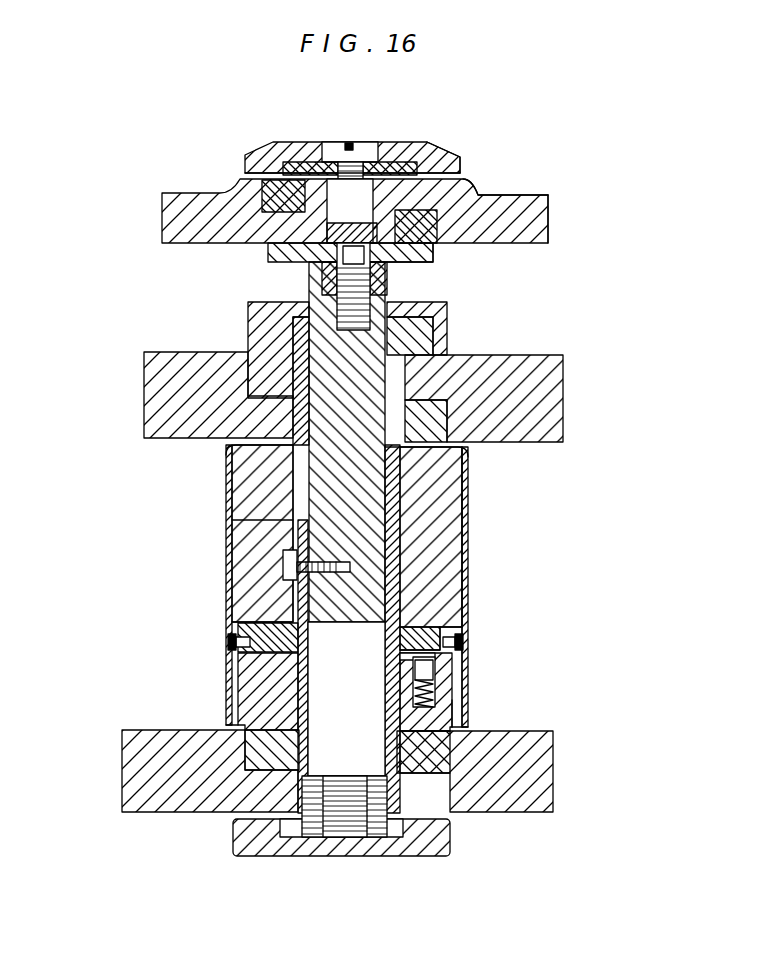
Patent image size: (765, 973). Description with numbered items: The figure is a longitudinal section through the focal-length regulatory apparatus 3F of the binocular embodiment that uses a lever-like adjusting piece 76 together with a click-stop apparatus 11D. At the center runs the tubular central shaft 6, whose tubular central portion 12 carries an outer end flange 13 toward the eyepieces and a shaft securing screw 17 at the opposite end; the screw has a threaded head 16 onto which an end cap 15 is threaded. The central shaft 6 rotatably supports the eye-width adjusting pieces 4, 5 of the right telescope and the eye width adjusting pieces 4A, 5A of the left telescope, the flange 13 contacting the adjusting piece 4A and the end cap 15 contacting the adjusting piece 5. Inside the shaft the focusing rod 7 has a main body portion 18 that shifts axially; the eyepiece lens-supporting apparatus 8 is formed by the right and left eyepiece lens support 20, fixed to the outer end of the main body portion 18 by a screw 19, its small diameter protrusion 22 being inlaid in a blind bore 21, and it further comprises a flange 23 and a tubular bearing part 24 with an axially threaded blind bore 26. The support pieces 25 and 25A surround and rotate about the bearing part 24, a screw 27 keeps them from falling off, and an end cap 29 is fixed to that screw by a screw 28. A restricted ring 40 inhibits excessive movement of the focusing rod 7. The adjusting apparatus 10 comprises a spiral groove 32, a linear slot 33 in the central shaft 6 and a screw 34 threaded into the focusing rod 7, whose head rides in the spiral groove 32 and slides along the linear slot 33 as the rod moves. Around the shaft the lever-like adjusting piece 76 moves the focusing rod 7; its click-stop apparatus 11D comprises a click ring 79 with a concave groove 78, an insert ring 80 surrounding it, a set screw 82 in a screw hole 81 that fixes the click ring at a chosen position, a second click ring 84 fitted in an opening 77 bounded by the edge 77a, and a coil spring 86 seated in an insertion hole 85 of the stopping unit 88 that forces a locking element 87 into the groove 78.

The end cap 29 is at (262, 150).
The screw 28 is at (338, 152).
The screw 27 is at (305, 166).
The tubular bearing part 24 is at (390, 166).
The axially threaded blind bore 26 is at (356, 170).
The screw 19 is at (440, 150).
The focal-length regulatory apparatus 3F is at (468, 134).
The support piece 25 is at (178, 210).
The support piece 25A is at (550, 225).
The eyepiece lens-supporting apparatus 8 is at (480, 192).
The flange 23 is at (268, 255).
The right and left eyepiece lens support 20 is at (434, 254).
The small diameter protrusion 22 is at (322, 276).
The focusing rod 7 is at (378, 488).
The blind bore 21 is at (372, 288).
The restricted ring 40 is at (248, 316).
The outer end flange 13 is at (425, 340).
The eye-width adjusting piece 4 is at (175, 380).
The eye width adjusting piece 4A is at (550, 404).
The main body portion 18 is at (232, 452).
The tubular central portion 12 is at (430, 533).
The tubular central shaft 6 is at (402, 513).
The spiral groove 32 is at (232, 516).
The adjusting apparatus 10 is at (255, 553).
The screw 34 is at (283, 565).
The lever-like adjusting piece 76 is at (460, 557).
The linear slot 33 is at (300, 585).
The click ring 79 is at (442, 600).
The concave groove 78 is at (422, 635).
The insert ring 80 is at (466, 622).
The click-stop apparatus 11D is at (485, 637).
The screw hole 81 is at (232, 640).
The set screw 82 is at (230, 645).
The second click ring 84 is at (240, 700).
The opening 77 is at (455, 712).
The lower body edge 77a is at (458, 717).
The locking element 87 is at (400, 657).
The stopping unit 88 is at (413, 675).
The coil spring 86 is at (413, 690).
The insertion hole 85 is at (430, 702).
The eye-width adjusting piece 5 is at (140, 765).
The eye width adjusting piece 5A is at (560, 780).
The end cap 15 is at (246, 853).
The shaft securing screw 17 is at (376, 838).
The threaded head 16 is at (301, 840).